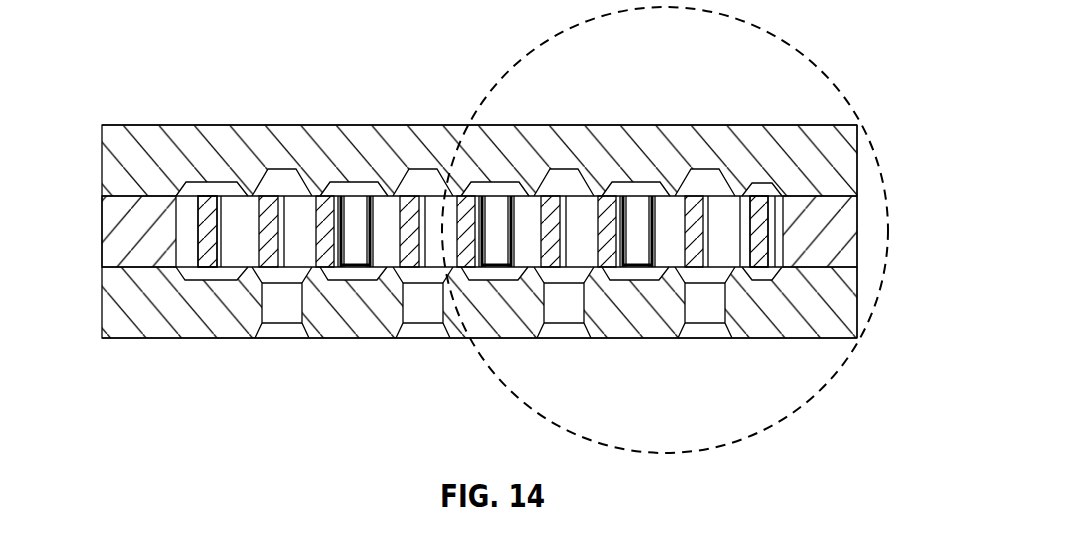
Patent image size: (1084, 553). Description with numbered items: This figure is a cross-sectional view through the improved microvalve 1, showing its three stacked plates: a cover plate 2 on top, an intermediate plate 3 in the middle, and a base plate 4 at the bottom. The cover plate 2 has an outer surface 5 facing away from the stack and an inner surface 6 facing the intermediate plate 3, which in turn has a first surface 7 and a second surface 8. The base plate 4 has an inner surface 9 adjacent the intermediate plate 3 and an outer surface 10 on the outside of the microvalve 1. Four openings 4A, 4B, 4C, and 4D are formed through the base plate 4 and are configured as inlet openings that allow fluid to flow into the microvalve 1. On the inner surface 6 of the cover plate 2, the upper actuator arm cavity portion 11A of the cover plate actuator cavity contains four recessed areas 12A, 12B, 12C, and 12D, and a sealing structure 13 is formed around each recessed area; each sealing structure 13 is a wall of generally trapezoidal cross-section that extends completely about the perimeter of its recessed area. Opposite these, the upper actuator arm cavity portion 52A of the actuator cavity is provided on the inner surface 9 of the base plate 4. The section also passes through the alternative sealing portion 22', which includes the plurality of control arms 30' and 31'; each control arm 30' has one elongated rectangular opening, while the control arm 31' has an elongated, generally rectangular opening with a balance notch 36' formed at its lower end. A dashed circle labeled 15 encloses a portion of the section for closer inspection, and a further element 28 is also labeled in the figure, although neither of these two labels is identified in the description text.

The microvalve 1 is at (169, 38).
The cover plate 2 is at (115, 148).
The intermediate plate 3 is at (116, 242).
The base plate 4 is at (113, 309).
The inlet opening 4A is at (698, 305).
The inlet opening 4B is at (578, 305).
The inlet opening 4C is at (413, 303).
The inlet opening 4D is at (272, 292).
The outer surface 5 is at (838, 125).
The inner surface 6 is at (130, 196).
The first surface 7 is at (838, 193).
The second surface 8 is at (130, 267).
The inner surface 9 is at (837, 262).
The outer surface 10 is at (143, 339).
The upper actuator arm cavity portion 11A is at (205, 192).
The recessed area 12A is at (703, 181).
The recessed area 12B is at (564, 181).
The recessed area 12C is at (421, 180).
The recessed area 12D is at (282, 172).
The sealing structure 13 is at (247, 194).
The detail region 15 is at (814, 60).
The sealing portion 22' is at (847, 224).
The conductive via 28 is at (207, 203).
The control arm 30' is at (409, 306).
The control arm 31' is at (661, 288).
The balance notch 36' is at (730, 287).
The upper actuator arm cavity portion 52A is at (198, 273).